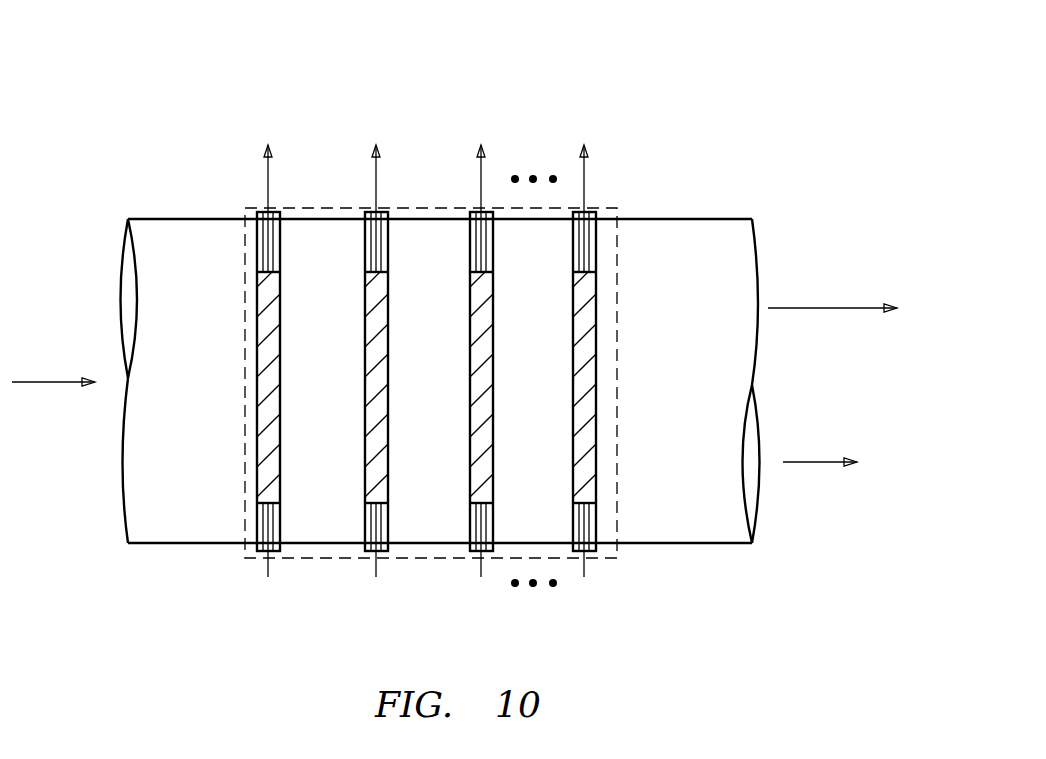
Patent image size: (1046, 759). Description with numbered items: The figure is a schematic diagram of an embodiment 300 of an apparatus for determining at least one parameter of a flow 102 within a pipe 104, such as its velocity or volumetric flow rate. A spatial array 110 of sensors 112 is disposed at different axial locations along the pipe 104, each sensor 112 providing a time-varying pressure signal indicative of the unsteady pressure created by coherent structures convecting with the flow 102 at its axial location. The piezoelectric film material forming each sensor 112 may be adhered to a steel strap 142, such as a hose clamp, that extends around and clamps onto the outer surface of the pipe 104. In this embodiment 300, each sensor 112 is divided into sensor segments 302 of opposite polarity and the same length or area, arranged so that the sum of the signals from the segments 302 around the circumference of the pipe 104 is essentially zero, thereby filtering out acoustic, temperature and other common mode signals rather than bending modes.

The embodiment 300 is at (699, 108).
The flow 102 is at (52, 380).
The pipe 104 is at (715, 219).
The spatial array 110 is at (618, 301).
The sensor 112 is at (256, 549).
The steel strap 142 is at (273, 253).
The sensor segment 302 is at (273, 397).